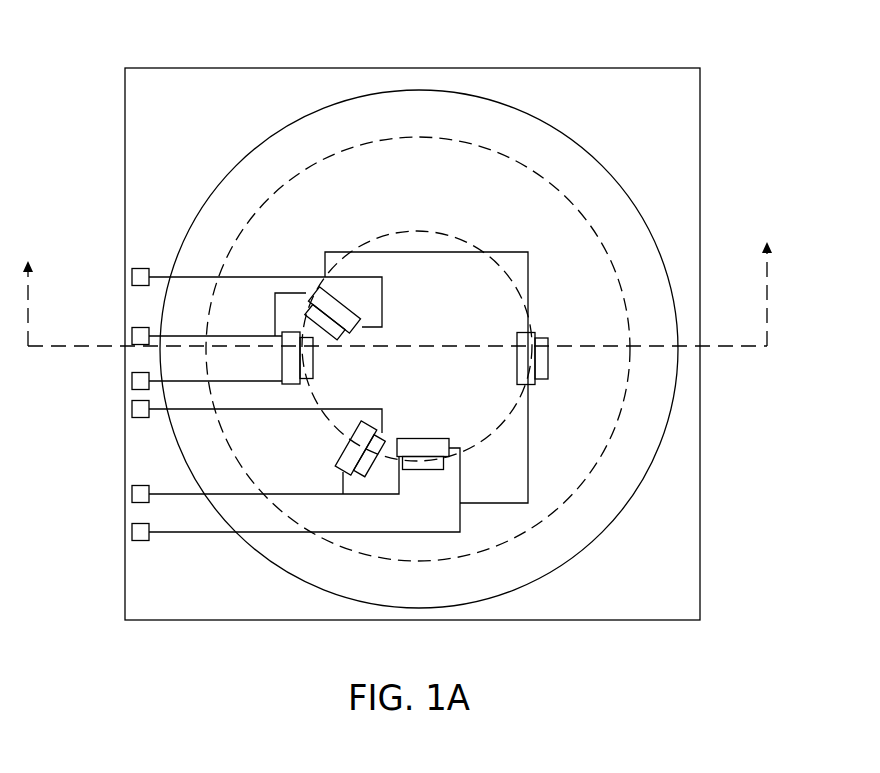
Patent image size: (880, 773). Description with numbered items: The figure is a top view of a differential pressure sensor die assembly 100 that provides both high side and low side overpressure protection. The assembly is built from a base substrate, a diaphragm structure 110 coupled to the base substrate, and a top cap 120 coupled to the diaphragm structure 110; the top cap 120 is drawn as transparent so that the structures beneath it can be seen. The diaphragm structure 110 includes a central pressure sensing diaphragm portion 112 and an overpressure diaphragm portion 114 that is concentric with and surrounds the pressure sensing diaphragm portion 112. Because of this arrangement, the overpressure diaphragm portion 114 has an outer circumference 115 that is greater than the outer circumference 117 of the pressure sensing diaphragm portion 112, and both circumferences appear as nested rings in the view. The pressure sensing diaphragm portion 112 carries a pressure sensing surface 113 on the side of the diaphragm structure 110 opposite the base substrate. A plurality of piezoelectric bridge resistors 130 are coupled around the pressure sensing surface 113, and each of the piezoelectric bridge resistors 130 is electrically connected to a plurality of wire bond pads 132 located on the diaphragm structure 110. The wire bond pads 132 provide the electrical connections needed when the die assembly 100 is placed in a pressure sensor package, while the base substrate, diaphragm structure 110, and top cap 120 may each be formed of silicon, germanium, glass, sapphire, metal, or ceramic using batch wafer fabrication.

The differential pressure sensor die assembly 100 is at (112, 54).
The diaphragm structure 110 is at (707, 538).
The pressure sensing diaphragm portion 112 is at (490, 405).
The pressure sensing surface 113 is at (447, 326).
The overpressure diaphragm portion 114 is at (607, 395).
The outer circumference of overpressure diaphragm portion 115 is at (513, 537).
The outer circumference of pressure sensing diaphragm portion 117 is at (414, 229).
The top cap 120 is at (262, 557).
The piezoelectric bridge resistors 130 is at (308, 368).
The wire bond pads 132 is at (132, 282).